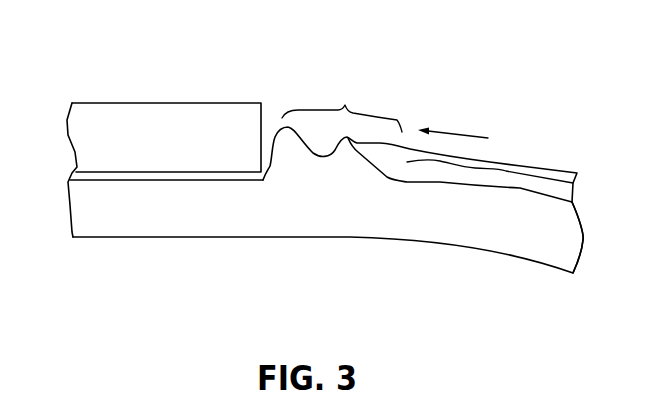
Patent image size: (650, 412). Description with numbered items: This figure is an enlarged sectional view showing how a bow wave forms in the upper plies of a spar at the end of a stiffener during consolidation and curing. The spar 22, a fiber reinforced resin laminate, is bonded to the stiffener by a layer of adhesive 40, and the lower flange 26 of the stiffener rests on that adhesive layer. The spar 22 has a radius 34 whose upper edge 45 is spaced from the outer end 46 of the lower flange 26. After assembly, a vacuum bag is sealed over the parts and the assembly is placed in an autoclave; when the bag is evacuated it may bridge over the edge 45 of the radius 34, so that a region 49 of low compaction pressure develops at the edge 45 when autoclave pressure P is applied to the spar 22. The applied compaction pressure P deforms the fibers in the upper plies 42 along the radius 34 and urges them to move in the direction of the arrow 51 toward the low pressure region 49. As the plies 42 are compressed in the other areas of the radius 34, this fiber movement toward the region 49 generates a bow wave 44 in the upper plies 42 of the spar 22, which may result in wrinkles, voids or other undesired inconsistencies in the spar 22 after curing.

The spar 22 is at (370, 203).
The lower flange 26 is at (163, 128).
The radius 34 is at (560, 292).
The layer of adhesive 40 is at (100, 160).
The upper plies 42 is at (518, 165).
The bow wave 44 is at (296, 170).
The upper edge 45 is at (400, 96).
The outer end 46 is at (277, 108).
The region of low compaction pressure 49 is at (342, 106).
The arrow 51 is at (452, 133).
The autoclave pressure P is at (525, 143).